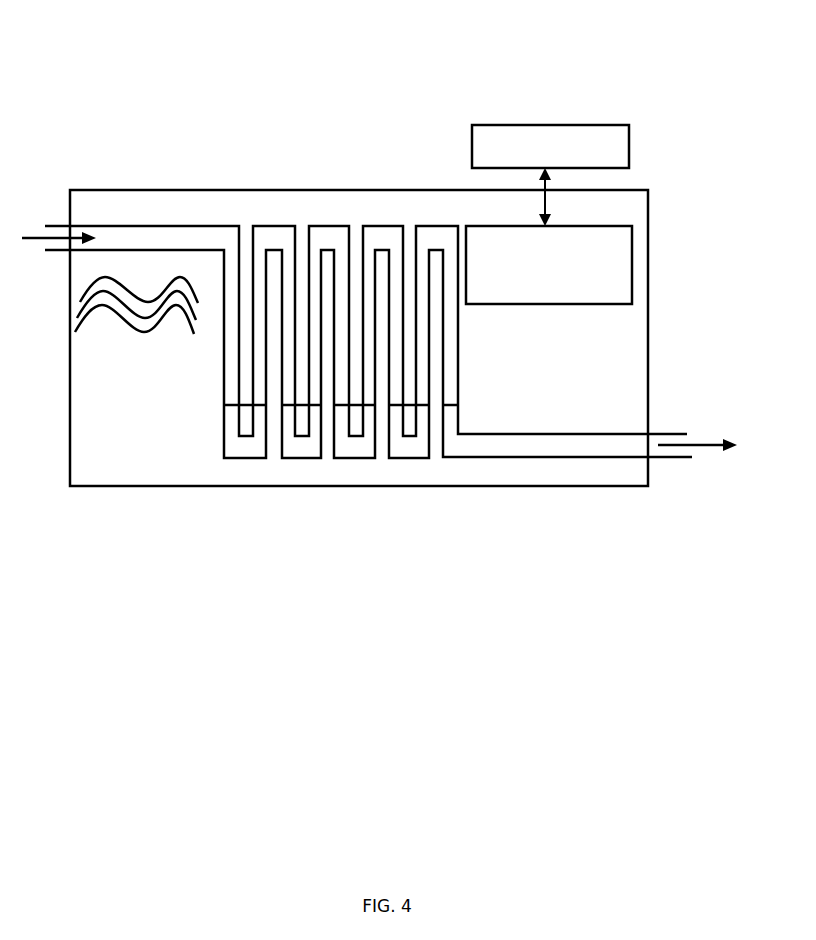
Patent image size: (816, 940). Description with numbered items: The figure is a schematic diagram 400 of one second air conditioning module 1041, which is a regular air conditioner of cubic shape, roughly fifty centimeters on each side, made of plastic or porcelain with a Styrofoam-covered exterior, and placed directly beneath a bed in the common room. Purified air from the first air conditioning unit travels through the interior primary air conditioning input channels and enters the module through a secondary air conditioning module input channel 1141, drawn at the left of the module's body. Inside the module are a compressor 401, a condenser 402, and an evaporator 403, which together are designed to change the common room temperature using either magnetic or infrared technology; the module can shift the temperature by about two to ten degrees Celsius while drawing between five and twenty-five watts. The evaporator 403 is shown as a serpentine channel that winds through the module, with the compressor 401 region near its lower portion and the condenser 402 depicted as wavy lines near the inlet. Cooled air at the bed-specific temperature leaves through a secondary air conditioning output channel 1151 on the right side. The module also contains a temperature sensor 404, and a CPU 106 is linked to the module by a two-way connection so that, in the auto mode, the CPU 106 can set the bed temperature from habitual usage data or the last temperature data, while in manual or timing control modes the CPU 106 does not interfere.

The schematic diagram 400 is at (368, 66).
The second air conditioning module 1041 is at (359, 338).
The secondary air conditioning module input channel 1141 is at (53, 250).
The secondary air conditioning output channel 1151 is at (668, 434).
The compressor 401 is at (224, 421).
The condenser 402 is at (126, 319).
The evaporator 403 is at (274, 225).
The temperature sensor 404 is at (549, 265).
The CPU 106 is at (550, 175).